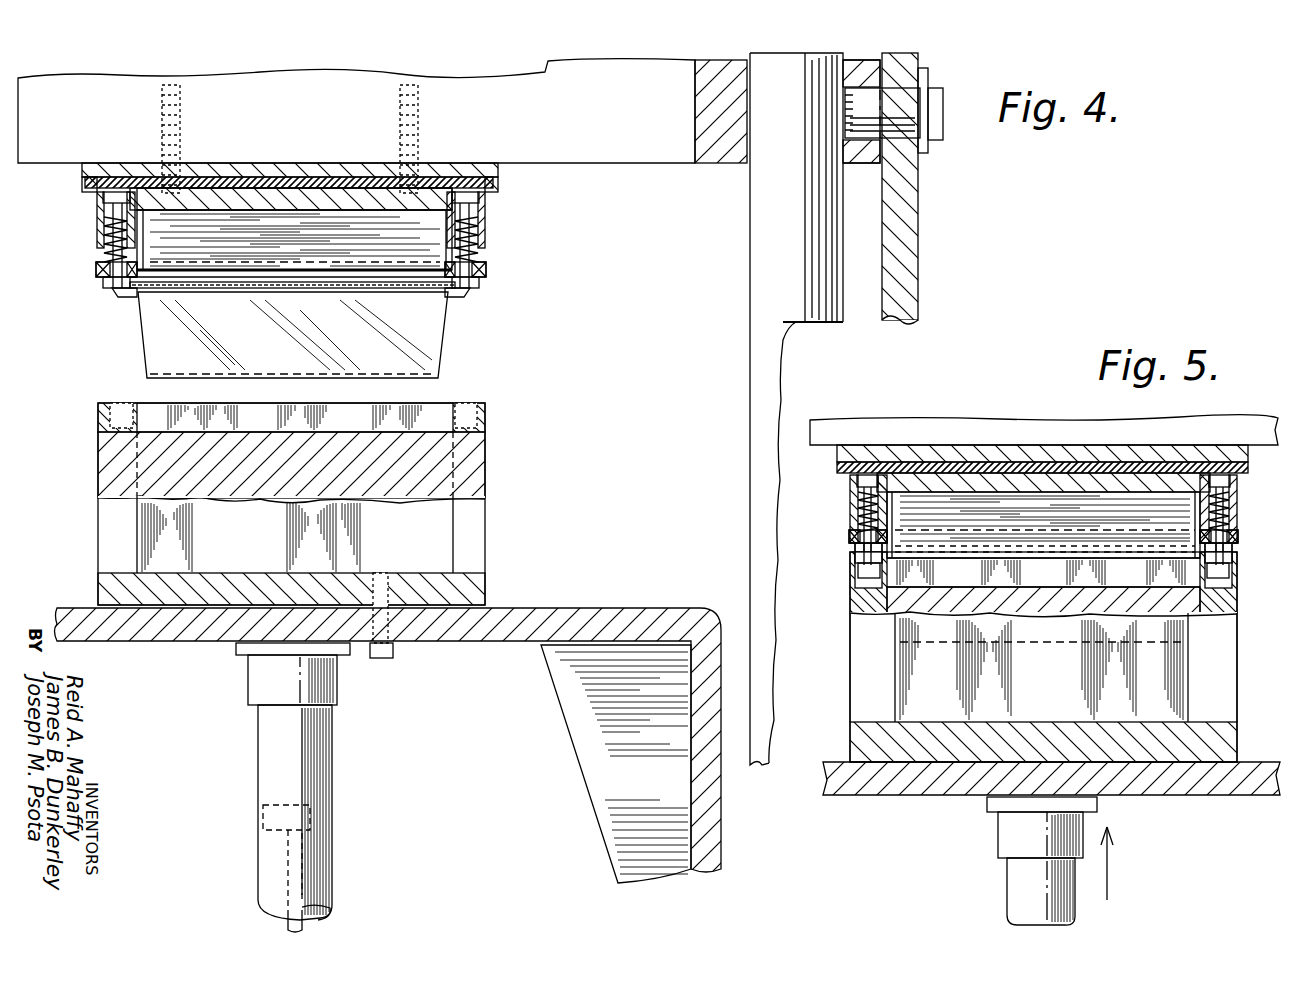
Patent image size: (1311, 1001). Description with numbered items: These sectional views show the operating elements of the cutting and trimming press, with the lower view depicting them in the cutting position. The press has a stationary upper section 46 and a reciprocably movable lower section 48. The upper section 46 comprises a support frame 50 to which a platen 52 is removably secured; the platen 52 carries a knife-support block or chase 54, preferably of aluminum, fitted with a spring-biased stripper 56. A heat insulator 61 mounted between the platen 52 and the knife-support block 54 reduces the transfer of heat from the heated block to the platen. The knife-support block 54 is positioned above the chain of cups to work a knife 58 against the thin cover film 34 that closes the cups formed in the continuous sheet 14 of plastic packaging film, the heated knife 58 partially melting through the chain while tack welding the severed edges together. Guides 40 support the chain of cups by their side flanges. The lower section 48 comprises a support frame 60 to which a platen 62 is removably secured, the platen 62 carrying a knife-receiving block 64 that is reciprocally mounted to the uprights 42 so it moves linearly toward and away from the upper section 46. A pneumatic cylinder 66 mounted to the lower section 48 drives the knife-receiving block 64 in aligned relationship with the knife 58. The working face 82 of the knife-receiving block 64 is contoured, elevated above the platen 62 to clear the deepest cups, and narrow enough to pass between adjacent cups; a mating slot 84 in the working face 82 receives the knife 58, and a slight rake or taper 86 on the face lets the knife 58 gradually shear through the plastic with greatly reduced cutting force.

In FIG. 4, the continuous sheet of plastic packaging film 14 is at (253, 290).
In FIG. 4, the cover film 34 is at (362, 280).
In FIG. 5, the cover film 34 is at (1043, 525).
In FIG. 4, the guides 40 is at (113, 293).
In FIG. 4, the uprights 42 is at (757, 303).
In FIG. 4, the stationary upper section 46 is at (86, 228).
In FIG. 5, the stationary upper section 46 is at (841, 519).
In FIG. 4, the reciprocably movable lower section 48 is at (495, 462).
In FIG. 5, the reciprocably movable lower section 48 is at (840, 683).
In FIG. 4, the support frame 50 is at (647, 148).
In FIG. 5, the support frame 50 is at (927, 418).
In FIG. 4, the platen 52 is at (478, 162).
In FIG. 5, the platen 52 is at (1032, 448).
In FIG. 4, the knife-support block or chase 54 is at (487, 215).
In FIG. 5, the knife-support block or chase 54 is at (1240, 488).
In FIG. 4, the spring-biased stripper 56 is at (485, 272).
In FIG. 5, the spring-biased stripper 56 is at (1237, 542).
In FIG. 4, the knife 58 is at (447, 248).
In FIG. 5, the knife 58 is at (1003, 543).
In FIG. 4, the support frame 60 is at (484, 627).
In FIG. 5, the support frame 60 is at (1218, 780).
In FIG. 4, the heat insulator 61 is at (310, 182).
In FIG. 5, the heat insulator 61 is at (1187, 467).
In FIG. 4, the platen 62 is at (467, 590).
In FIG. 5, the platen 62 is at (907, 747).
In FIG. 4, the knife-receiving block 64 is at (470, 520).
In FIG. 5, the knife-receiving block 64 is at (1220, 643).
In FIG. 4, the pneumatic cylinder 66 is at (332, 775).
In FIG. 5, the pneumatic cylinder 66 is at (1017, 883).
In FIG. 4, the working surface or face 82 is at (417, 402).
In FIG. 4, the mating slot 84 is at (155, 403).
In FIG. 5, the mating slot 84 is at (860, 595).
In FIG. 4, the rake or taper 86 is at (328, 400).